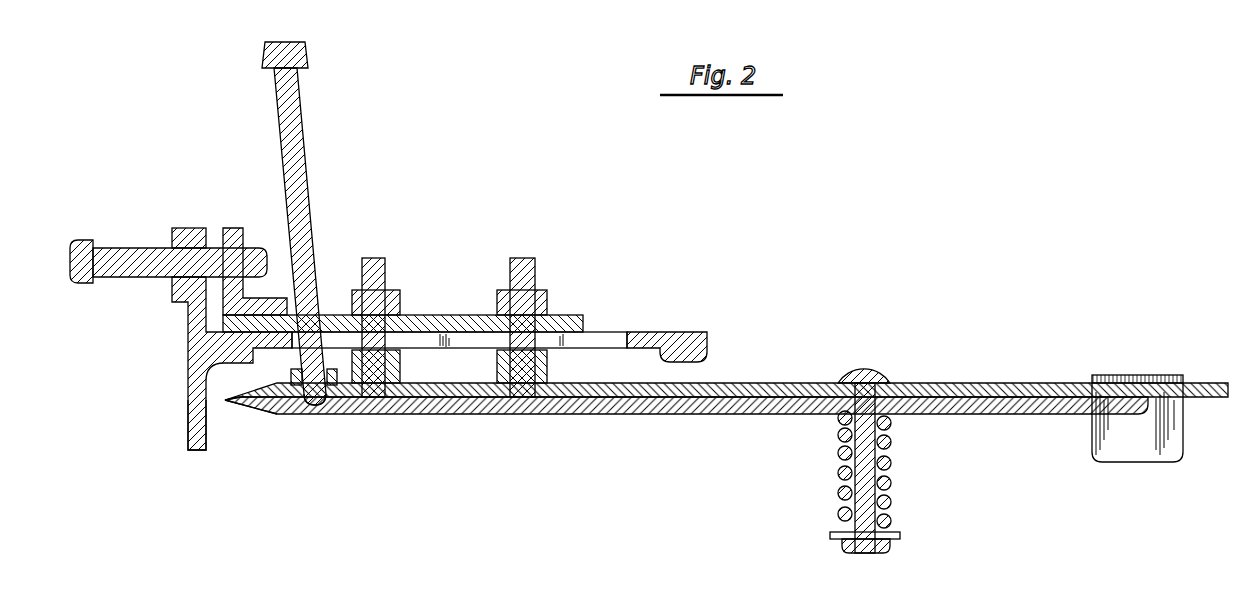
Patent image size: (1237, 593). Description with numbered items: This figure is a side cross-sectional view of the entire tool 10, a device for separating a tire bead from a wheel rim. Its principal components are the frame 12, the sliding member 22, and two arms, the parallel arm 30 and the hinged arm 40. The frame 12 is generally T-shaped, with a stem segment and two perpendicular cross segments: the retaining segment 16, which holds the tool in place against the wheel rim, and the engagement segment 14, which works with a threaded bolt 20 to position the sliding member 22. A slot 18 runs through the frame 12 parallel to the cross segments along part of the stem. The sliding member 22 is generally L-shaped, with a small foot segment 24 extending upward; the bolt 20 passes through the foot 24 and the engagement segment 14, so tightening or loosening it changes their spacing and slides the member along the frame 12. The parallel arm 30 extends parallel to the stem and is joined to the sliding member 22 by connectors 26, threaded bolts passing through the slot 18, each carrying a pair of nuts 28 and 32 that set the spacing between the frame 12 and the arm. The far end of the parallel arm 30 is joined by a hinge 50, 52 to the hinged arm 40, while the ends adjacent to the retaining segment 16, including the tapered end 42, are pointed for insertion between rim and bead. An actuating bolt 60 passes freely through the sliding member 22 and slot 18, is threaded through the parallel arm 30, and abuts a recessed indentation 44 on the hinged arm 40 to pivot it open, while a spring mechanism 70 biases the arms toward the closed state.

The tool 10 is at (924, 354).
The frame 12 is at (673, 332).
The engagement segment 14 is at (188, 342).
The retaining segment 16 is at (198, 452).
The slot 18 is at (600, 332).
The threaded bolt 20 is at (137, 248).
The sliding member 22 is at (570, 315).
The foot segment 24 is at (234, 228).
The connectors 26 is at (375, 258).
The nuts 28 is at (497, 299).
The parallel arm 30 is at (740, 383).
The nuts 32 is at (497, 365).
The hinged arm 40 is at (752, 414).
The tapered end of hinged arm 42 is at (245, 410).
The recessed indentation 44 is at (326, 412).
The hinge 50 is at (1160, 463).
The hinge 52 is at (1143, 379).
The actuating bolt 60 is at (302, 110).
The spring mechanism 70 is at (893, 483).